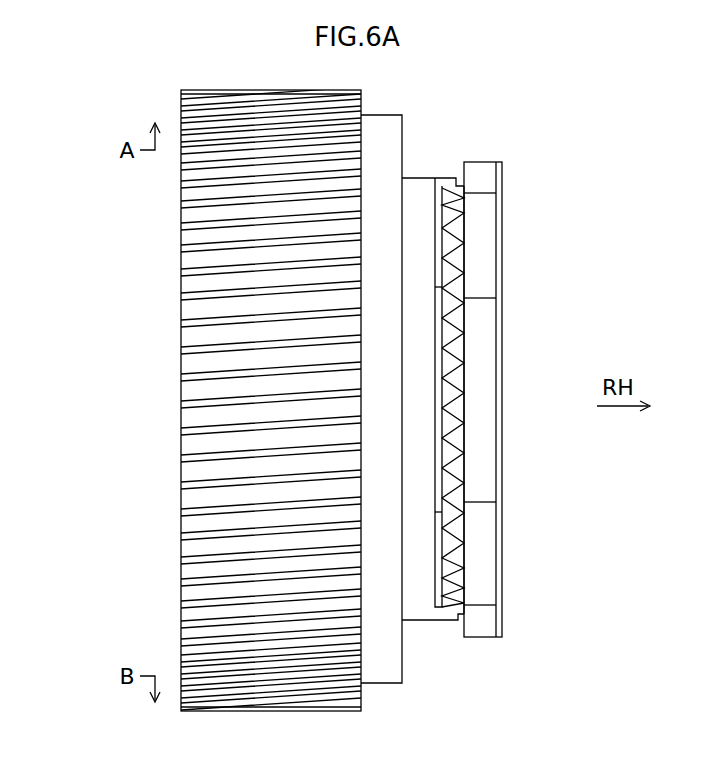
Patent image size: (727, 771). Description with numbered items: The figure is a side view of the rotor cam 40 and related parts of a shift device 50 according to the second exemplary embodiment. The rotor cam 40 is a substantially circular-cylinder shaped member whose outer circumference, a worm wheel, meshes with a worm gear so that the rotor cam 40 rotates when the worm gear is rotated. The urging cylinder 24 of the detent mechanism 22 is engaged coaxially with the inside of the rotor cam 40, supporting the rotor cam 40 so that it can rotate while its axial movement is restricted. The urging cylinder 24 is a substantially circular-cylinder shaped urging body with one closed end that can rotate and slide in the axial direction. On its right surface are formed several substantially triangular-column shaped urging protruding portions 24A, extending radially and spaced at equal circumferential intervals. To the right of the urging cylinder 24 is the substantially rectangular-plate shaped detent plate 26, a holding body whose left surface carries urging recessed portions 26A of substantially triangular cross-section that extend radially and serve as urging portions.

The shift device 50 is at (96, 172).
The rotor cam 40 is at (279, 90).
The detent mechanism 22 is at (446, 132).
The urging cylinder 24 is at (424, 178).
The urging protruding portions 24A is at (440, 412).
The detent plate 26 is at (502, 240).
The urging recessed portions 26A is at (456, 418).